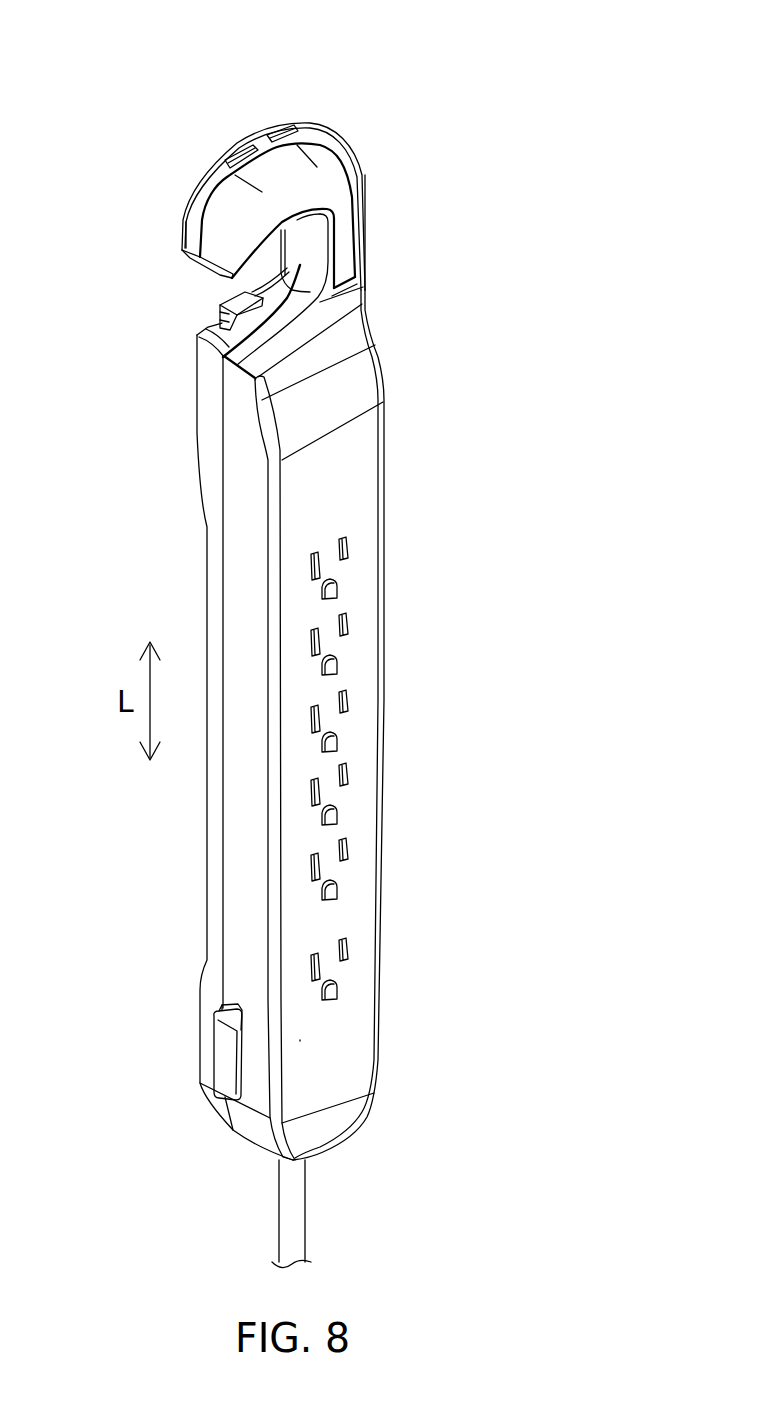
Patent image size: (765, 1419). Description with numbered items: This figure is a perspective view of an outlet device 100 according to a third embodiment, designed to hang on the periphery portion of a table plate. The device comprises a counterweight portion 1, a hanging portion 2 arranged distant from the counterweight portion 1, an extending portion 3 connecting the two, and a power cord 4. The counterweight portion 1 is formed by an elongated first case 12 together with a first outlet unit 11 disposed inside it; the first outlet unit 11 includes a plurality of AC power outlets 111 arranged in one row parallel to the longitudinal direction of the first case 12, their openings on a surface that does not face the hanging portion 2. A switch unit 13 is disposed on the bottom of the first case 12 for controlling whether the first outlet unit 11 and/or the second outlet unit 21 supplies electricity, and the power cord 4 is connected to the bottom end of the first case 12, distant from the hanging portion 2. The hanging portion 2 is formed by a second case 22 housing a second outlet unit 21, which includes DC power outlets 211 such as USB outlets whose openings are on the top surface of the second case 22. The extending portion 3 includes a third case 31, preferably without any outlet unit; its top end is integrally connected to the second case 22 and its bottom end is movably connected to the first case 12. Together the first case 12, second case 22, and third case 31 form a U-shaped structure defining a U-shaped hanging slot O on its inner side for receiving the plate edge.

The outlet device 100 is at (490, 13).
The counterweight portion 1 is at (388, 490).
The first outlet unit 11 is at (413, 768).
The AC power outlet 111 is at (349, 548).
The first case 12 is at (356, 1026).
The switch unit 13 is at (226, 1058).
The hanging portion 2 is at (199, 177).
The second outlet unit 21 is at (314, 52).
The DC power outlet 211 is at (232, 160).
The second case 22 is at (197, 205).
The extending portion 3 is at (364, 249).
The third case 31 is at (345, 226).
The power cord 4 is at (305, 1212).
The U-shaped hanging slot O is at (208, 289).